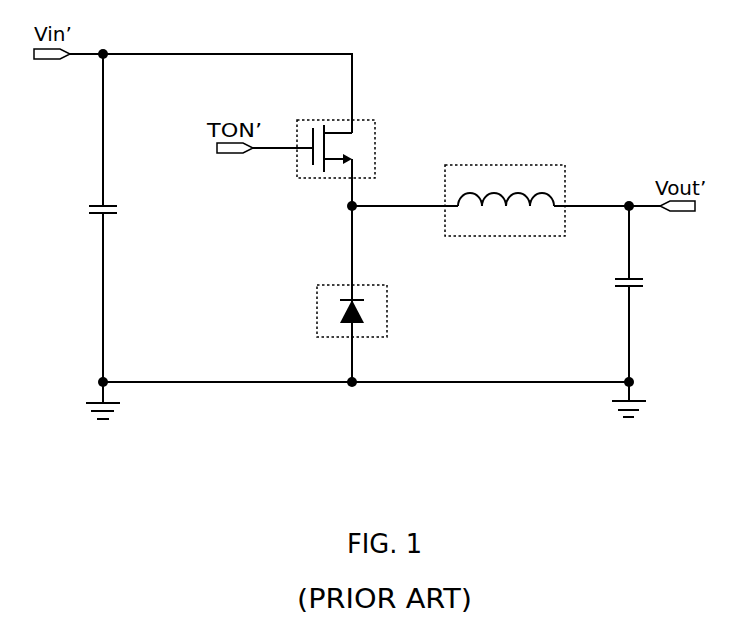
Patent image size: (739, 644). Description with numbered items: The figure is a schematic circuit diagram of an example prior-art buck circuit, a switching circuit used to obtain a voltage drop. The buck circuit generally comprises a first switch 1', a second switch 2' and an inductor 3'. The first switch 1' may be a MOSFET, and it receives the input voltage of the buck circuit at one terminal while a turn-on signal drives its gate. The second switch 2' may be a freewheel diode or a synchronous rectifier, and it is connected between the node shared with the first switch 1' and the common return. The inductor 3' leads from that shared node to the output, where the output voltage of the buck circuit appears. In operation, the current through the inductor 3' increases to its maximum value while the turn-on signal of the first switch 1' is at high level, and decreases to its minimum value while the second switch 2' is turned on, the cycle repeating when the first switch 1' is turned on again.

The first switch 1' is at (362, 138).
The second switch 2' is at (377, 308).
The inductor 3' is at (530, 188).